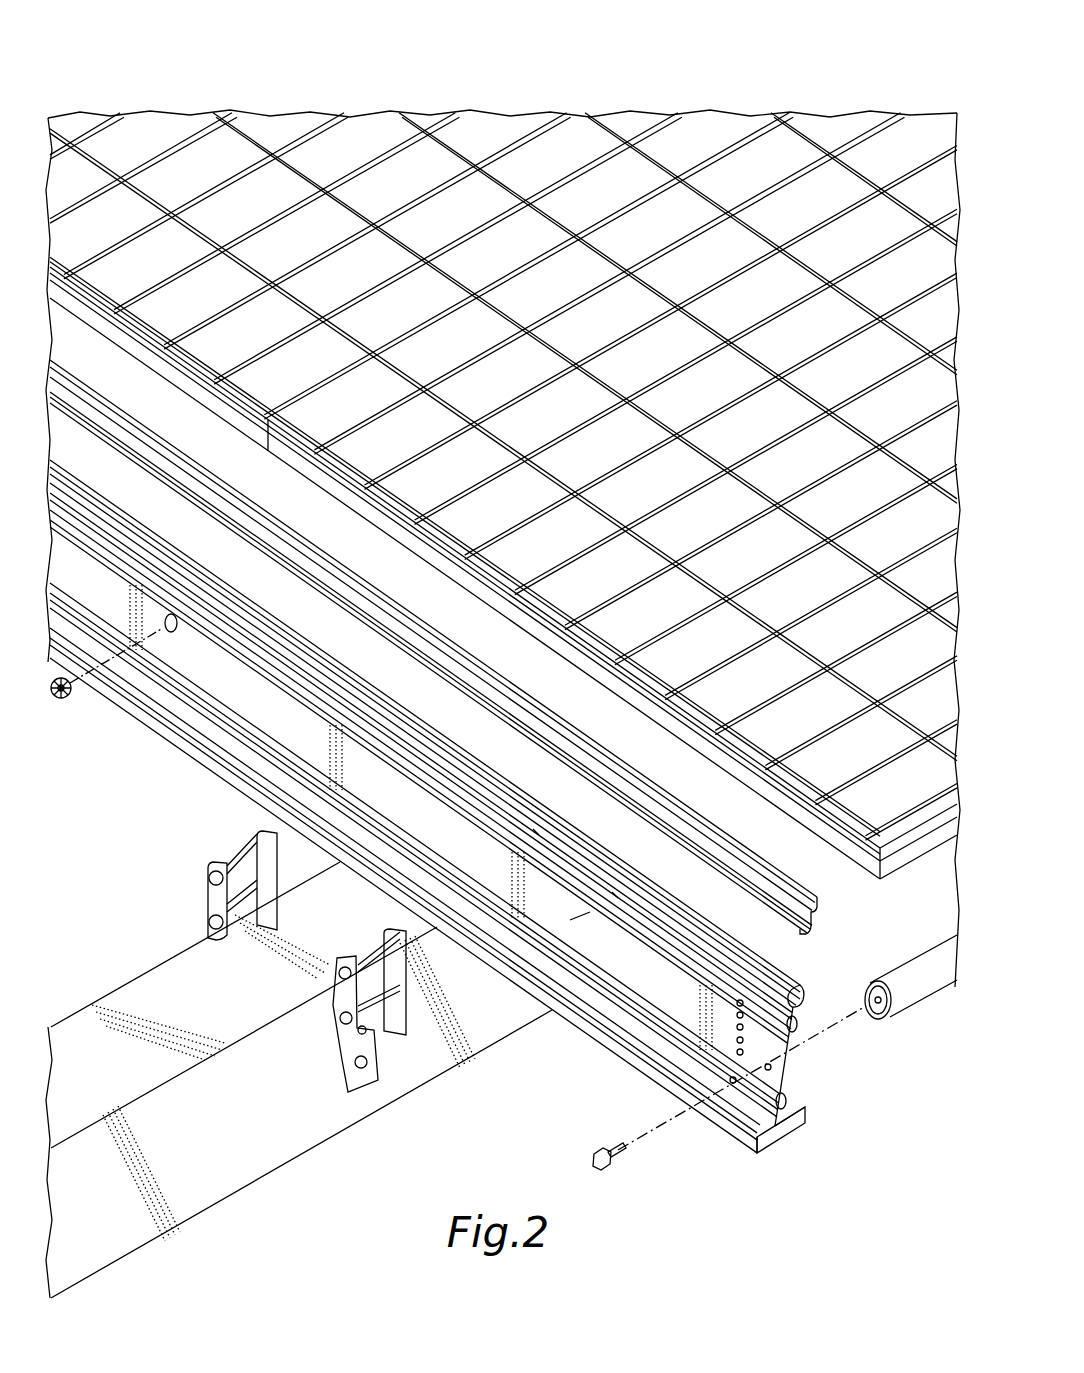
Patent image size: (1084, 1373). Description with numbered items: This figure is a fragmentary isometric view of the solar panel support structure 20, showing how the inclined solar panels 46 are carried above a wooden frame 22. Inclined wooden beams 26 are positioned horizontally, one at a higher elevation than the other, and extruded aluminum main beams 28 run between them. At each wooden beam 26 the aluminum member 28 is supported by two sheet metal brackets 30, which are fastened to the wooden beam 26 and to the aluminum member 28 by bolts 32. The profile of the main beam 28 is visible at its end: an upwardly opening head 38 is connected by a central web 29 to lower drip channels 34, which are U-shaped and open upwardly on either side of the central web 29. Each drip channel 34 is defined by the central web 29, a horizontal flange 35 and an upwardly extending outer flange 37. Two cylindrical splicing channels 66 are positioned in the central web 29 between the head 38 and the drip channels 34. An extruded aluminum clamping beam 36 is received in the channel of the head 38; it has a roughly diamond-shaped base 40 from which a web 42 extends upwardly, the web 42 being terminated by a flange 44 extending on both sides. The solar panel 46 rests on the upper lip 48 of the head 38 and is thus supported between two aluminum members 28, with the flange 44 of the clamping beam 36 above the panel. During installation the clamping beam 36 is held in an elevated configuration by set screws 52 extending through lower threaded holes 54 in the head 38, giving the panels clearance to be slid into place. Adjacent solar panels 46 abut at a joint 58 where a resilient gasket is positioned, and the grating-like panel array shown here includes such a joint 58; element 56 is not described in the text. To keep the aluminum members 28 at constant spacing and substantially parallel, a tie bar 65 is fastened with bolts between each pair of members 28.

The solar panel support structure 20 is at (600, 95).
The wooden frame 22 is at (146, 1241).
The wooden beam 26 is at (239, 1193).
The main beam 28 is at (595, 1045).
The central web 29 is at (790, 1070).
The sheet metal bracket 30 is at (213, 904).
The bolt 32 is at (237, 862).
The drip channel 34 is at (760, 1157).
The horizontal flange 35 is at (777, 1144).
The clamping beam 36 is at (777, 907).
The outer flange 37 is at (753, 1142).
The head 38 is at (804, 990).
The base 40 is at (818, 923).
The web 42 is at (814, 902).
The flange 44 is at (724, 822).
The solar panel 46 is at (187, 391).
The upper lip 48 is at (781, 966).
The set screw 52 is at (563, 925).
The lower threaded hole 54 is at (616, 895).
The edge 56 is at (536, 832).
The joint 58 is at (415, 337).
The tie bar 65 is at (908, 1008).
The splicing channel 66 is at (799, 1026).